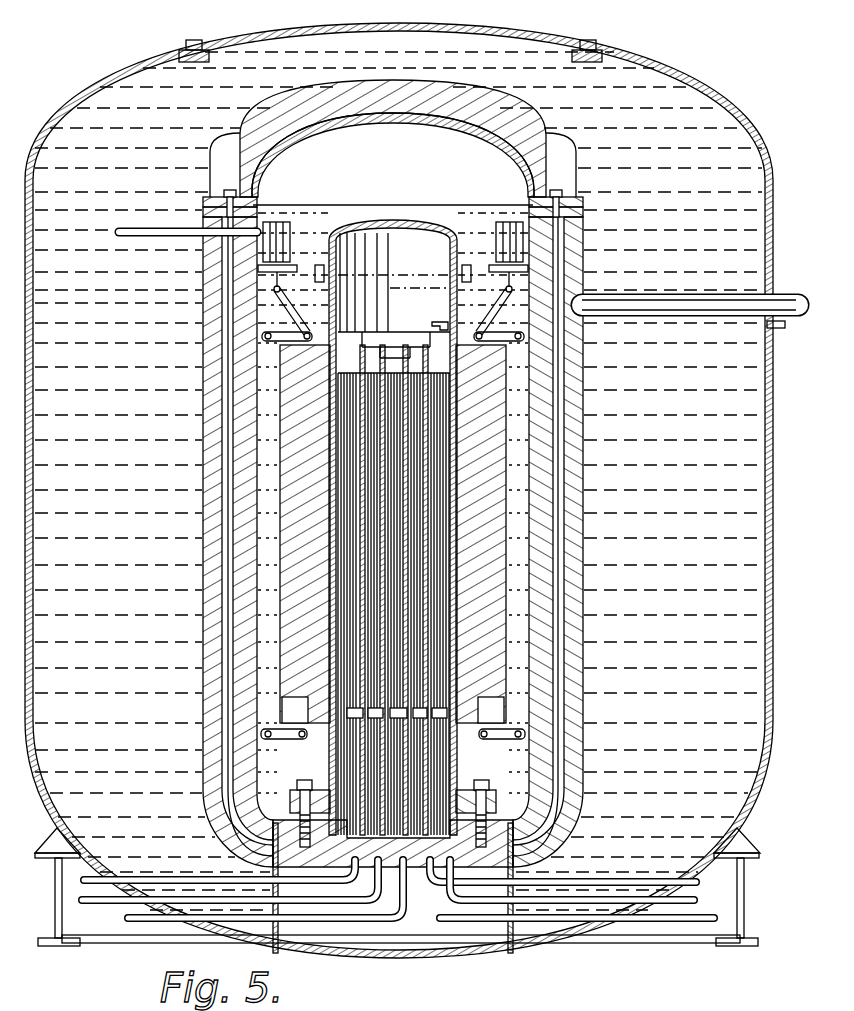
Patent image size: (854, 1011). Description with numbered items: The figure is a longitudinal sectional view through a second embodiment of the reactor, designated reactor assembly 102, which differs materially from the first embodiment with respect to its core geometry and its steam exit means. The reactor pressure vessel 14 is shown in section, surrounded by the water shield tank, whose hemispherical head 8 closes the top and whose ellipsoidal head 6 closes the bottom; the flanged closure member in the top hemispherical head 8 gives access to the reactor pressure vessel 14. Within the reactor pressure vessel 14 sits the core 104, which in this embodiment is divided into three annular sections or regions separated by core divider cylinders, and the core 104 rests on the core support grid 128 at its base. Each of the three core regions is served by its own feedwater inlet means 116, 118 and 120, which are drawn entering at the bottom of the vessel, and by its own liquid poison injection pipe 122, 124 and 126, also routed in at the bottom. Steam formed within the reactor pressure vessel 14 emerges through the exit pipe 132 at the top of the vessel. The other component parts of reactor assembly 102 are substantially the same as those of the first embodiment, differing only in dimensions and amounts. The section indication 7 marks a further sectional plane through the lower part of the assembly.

The reactor assembly 102 is at (708, 88).
The exit pipe 132 is at (634, 300).
The core 104 is at (393, 527).
The reactor pressure vessel 14 is at (455, 522).
The core support grid 128 is at (404, 721).
The liquid poison injection pipe 126 is at (130, 877).
The liquid poison injection pipe 124 is at (110, 906).
The liquid poison injection pipe 122 is at (158, 920).
The feedwater inlet means 120 is at (653, 880).
The feedwater inlet means 118 is at (694, 906).
The feedwater inlet means 116 is at (698, 927).
The hemispherical head 8 is at (310, 273).
The ellipsoidal head 6 is at (670, 535).
The section line 7- 7 is at (195, 866).